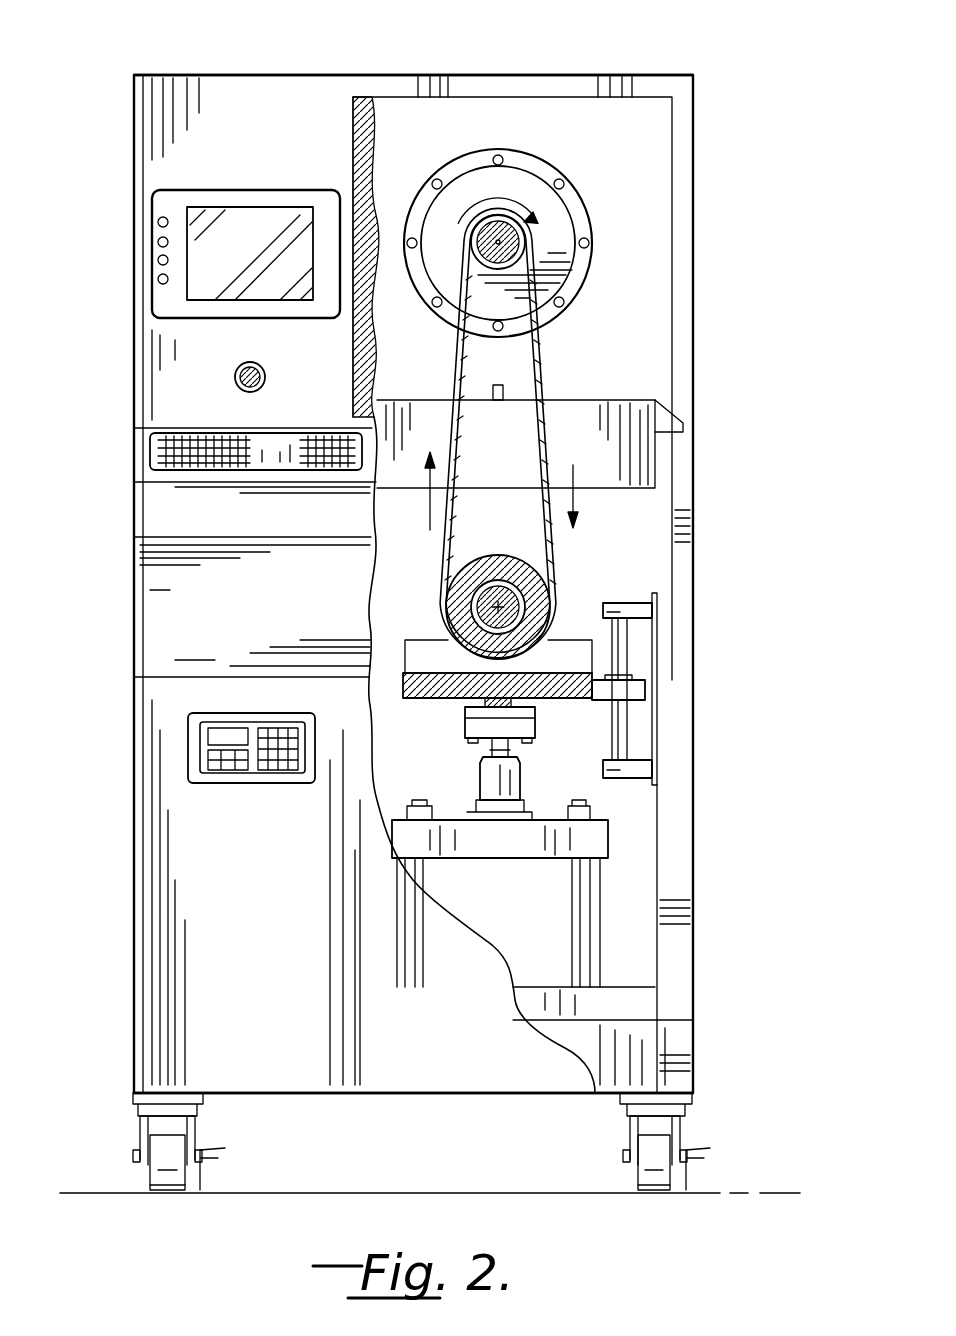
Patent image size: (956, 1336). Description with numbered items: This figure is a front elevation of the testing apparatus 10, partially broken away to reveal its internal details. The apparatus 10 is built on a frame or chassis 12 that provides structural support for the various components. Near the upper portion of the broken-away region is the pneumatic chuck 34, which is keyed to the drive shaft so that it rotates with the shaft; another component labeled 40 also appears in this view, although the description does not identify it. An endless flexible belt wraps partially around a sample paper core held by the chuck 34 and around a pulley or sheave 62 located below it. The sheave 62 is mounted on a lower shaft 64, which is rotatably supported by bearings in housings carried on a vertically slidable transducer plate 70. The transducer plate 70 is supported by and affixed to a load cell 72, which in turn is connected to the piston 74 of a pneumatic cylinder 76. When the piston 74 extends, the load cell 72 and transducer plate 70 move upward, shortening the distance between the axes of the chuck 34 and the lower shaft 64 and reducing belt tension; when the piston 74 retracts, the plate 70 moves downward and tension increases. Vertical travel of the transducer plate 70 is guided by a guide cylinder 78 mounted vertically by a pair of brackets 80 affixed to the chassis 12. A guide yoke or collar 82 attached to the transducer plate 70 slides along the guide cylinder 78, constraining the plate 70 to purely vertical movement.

The testing apparatus 10 is at (731, 62).
The frame or chassis 12 is at (612, 1068).
The pneumatic chuck 34 is at (560, 172).
The drive pulley 40 is at (463, 173).
The pulley or sheave 62 is at (490, 550).
The lower shaft 64 is at (442, 612).
The transducer plate 70 is at (403, 688).
The load cell 72 is at (467, 727).
The piston 74 is at (500, 780).
The pneumatic cylinder 76 is at (600, 884).
The guide cylinder 78 is at (652, 643).
The brackets 80 is at (633, 604).
The guide yoke or collar 82 is at (633, 688).